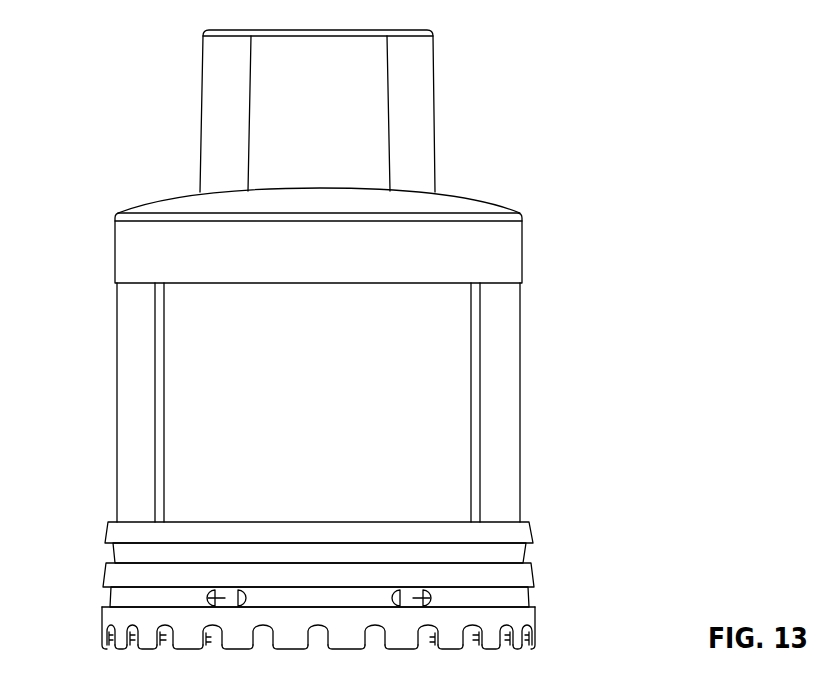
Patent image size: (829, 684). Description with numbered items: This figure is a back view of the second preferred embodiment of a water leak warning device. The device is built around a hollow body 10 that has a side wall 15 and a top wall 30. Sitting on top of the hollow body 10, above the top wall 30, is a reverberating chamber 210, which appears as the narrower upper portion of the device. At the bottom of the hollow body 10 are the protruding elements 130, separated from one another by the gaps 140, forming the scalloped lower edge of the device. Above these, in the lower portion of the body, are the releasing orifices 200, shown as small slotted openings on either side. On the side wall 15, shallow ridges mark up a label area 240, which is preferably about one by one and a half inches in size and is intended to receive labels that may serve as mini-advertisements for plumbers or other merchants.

The hollow body 10 is at (623, 83).
The side wall 15 is at (505, 413).
The top wall 30 is at (413, 207).
The protruding elements 130 is at (185, 640).
The gaps 140 is at (433, 630).
The releasing orifices 200 is at (207, 598).
The reverberating chamber 210 is at (318, 113).
The label area 240 is at (422, 363).